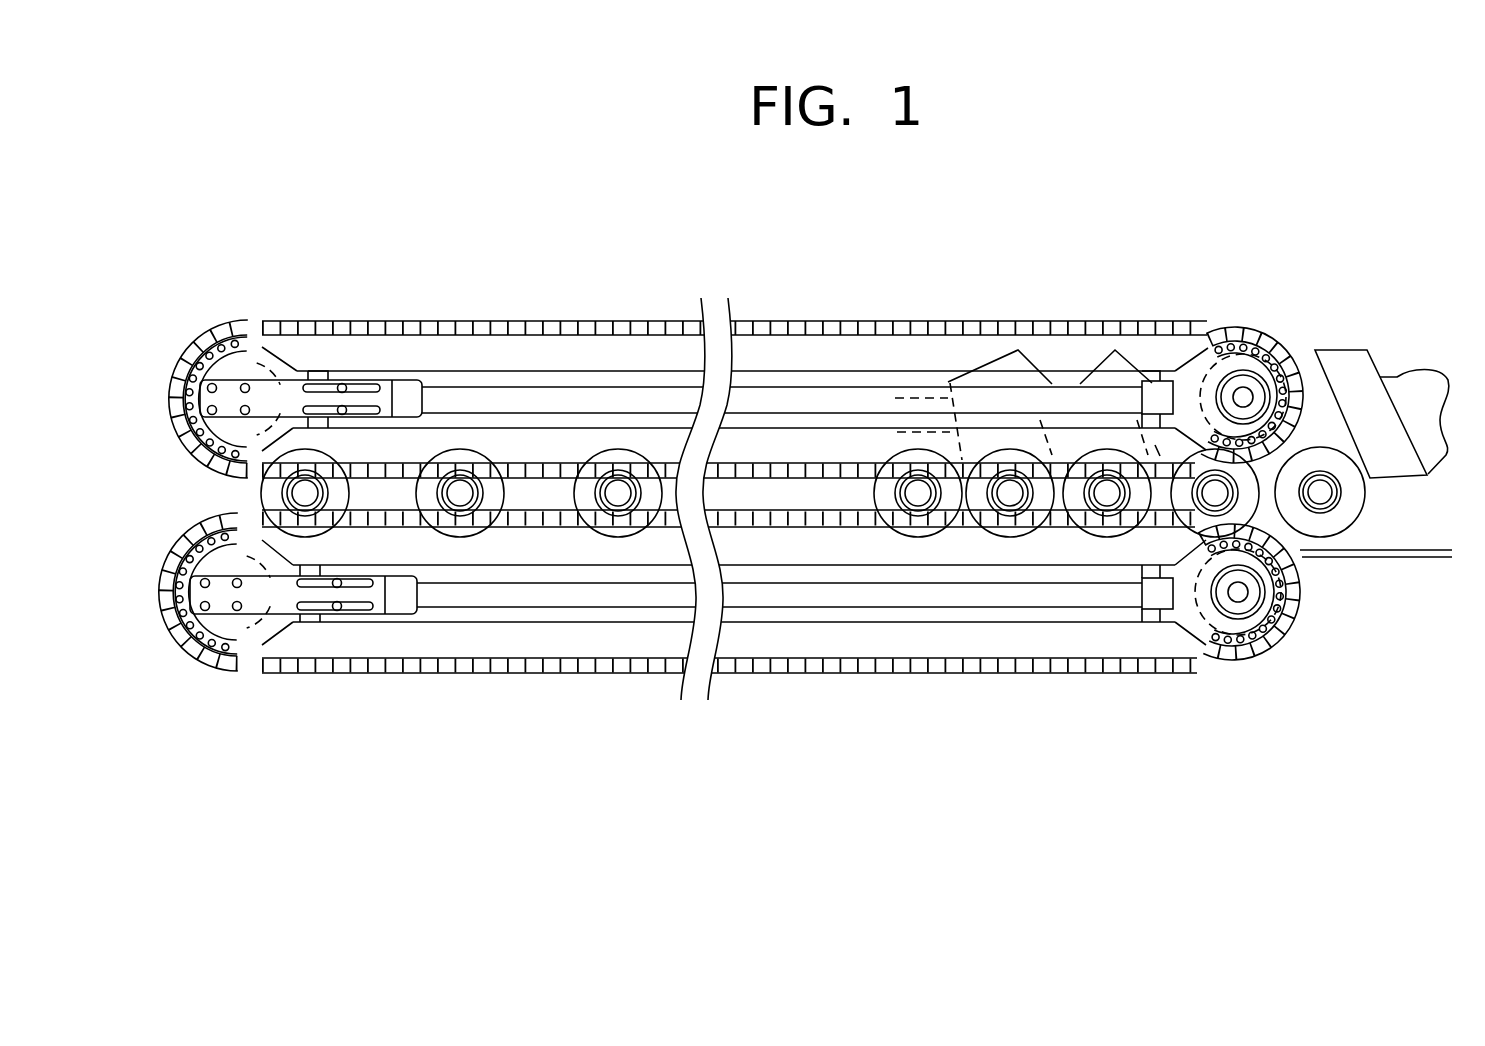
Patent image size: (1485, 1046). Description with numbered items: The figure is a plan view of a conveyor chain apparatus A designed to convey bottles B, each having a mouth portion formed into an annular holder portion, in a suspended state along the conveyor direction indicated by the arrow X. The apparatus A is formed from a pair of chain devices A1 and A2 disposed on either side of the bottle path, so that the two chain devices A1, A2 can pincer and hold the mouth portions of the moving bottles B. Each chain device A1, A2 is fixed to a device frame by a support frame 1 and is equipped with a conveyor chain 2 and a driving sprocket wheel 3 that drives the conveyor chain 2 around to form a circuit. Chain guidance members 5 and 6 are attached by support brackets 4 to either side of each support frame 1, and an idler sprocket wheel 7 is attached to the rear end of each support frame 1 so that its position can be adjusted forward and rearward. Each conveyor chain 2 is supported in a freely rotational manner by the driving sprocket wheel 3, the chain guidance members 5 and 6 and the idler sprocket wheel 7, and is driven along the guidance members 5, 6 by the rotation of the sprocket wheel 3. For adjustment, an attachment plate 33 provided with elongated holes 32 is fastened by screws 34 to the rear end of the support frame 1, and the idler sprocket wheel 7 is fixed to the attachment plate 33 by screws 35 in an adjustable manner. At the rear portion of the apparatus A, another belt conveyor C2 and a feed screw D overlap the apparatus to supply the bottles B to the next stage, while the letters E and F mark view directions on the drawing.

The support frame 1 is at (860, 397).
The conveyor chain 2 is at (793, 313).
The sprocket wheel 3 is at (1263, 343).
The support bracket 4 is at (1241, 392).
The chain guidance member 5 is at (577, 443).
The chain guidance member 6 is at (612, 357).
The idler sprocket wheel 7 is at (240, 372).
The elongated hole 32 is at (366, 388).
The attachment plate 33 is at (286, 366).
The screw 34 is at (343, 387).
The screw 35 is at (250, 330).
The conveyor chain apparatus A is at (1013, 280).
The chain device A1 is at (1118, 320).
The chain device A2 is at (1103, 679).
The bottle B is at (1354, 527).
The belt conveyor C2 is at (1338, 552).
The feed screw D is at (1337, 346).
The view direction E is at (1130, 593).
The view direction F is at (1160, 317).
The conveyor direction arrow X is at (805, 495).